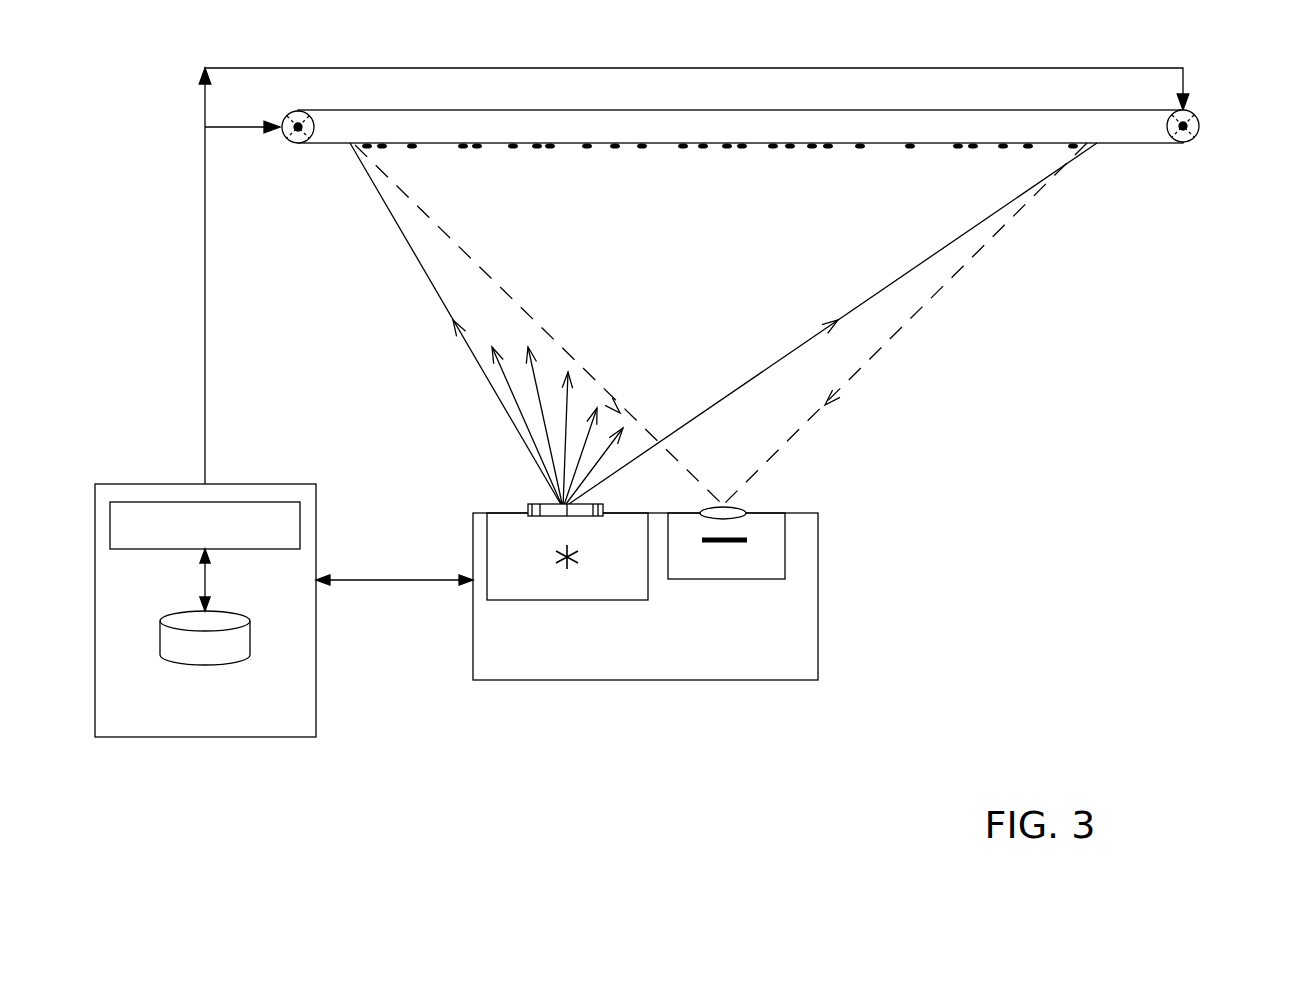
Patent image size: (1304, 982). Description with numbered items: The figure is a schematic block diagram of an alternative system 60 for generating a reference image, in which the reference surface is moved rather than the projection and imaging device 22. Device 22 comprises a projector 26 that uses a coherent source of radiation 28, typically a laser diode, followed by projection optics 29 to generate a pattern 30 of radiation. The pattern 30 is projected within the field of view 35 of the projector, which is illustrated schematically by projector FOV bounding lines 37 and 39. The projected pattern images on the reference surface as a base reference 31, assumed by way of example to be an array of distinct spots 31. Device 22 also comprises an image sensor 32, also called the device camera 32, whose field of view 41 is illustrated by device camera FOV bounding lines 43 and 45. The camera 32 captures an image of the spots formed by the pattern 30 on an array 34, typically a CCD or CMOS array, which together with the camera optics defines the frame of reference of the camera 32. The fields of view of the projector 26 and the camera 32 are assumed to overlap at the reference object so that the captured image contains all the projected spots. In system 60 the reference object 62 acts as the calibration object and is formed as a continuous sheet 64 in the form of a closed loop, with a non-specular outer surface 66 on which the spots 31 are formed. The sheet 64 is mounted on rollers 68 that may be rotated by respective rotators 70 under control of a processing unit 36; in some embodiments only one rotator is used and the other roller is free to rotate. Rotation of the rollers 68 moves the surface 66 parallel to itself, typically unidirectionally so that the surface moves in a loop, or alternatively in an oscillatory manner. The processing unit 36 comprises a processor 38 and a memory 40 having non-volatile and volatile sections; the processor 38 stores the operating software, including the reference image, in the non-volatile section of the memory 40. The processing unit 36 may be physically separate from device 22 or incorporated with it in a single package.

The device 22 is at (818, 590).
The projector 26 is at (493, 530).
The coherent source of radiation 28 is at (556, 557).
The projection optics 29 is at (530, 504).
The pattern 30 is at (428, 344).
The base reference 31 is at (1085, 331).
The image sensor 32 is at (785, 545).
The array 34 is at (748, 538).
The field of view 35 is at (575, 322).
The processing unit 36 is at (95, 648).
The projector FOV bounding line 37 is at (352, 147).
The processor 38 is at (110, 520).
The projector FOV bounding line 39 is at (900, 285).
The memory 40 is at (250, 642).
The field of view 41 is at (710, 474).
The device camera FOV bounding line 43 is at (935, 292).
The device camera FOV bounding line 45 is at (477, 267).
The system 60 is at (165, 243).
The reference object 62 is at (1020, 110).
The continuous sheet 64 is at (1160, 239).
The outer surface 66 is at (1115, 145).
The rollers 68 is at (300, 145).
The rotators 70 is at (288, 115).